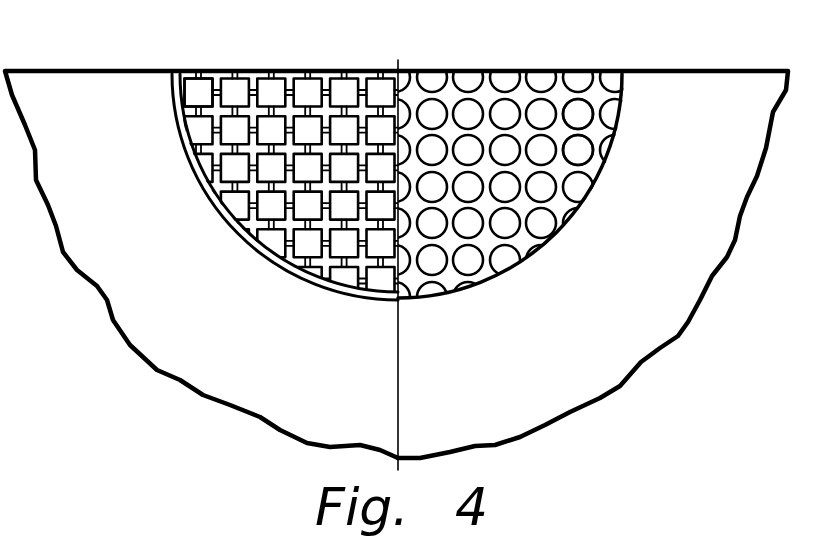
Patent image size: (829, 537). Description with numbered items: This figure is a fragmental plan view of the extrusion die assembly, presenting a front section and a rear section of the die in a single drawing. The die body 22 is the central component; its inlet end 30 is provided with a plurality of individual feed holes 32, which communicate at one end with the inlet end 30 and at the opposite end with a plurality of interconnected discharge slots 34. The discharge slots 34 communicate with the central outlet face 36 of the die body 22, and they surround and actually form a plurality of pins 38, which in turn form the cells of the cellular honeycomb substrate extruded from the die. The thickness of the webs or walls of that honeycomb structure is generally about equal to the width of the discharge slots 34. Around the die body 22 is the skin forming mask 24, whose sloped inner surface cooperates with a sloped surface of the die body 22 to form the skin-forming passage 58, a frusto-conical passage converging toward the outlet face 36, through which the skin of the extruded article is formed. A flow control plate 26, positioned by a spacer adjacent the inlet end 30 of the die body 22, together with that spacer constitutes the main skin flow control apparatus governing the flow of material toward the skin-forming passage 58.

The die body 22 is at (592, 178).
The skin forming mask 24 is at (130, 314).
The flow control plate 26 is at (722, 212).
The inlet end 30 is at (522, 97).
The feed holes 32 is at (582, 150).
The discharge slots 34 is at (320, 127).
The central outlet face 36 is at (204, 97).
The pins 38 is at (267, 132).
The skin-forming passage 58 is at (197, 172).